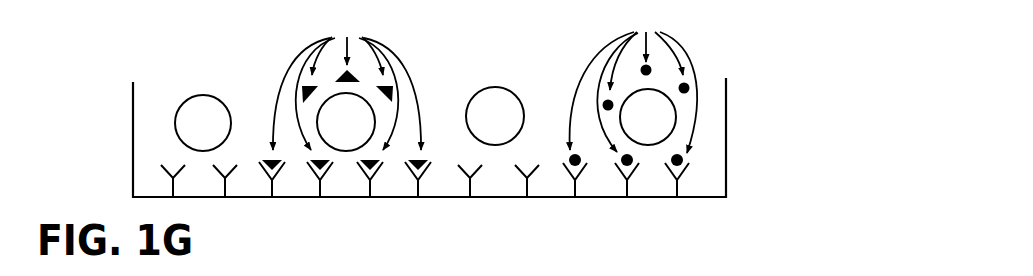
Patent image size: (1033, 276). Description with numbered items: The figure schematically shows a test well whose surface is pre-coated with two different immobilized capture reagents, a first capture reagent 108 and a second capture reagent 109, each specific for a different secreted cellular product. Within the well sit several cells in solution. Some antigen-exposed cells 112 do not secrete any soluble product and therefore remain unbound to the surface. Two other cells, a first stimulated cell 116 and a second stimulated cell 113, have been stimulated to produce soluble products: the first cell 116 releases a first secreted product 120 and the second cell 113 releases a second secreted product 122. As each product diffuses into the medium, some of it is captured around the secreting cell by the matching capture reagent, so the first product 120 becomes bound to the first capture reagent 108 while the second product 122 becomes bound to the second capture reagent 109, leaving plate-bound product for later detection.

The first capture reagent 108 is at (408, 186).
The second capture reagent 109 is at (584, 184).
The antigen-exposed cells 112 is at (203, 107).
The second stimulated cell 113 is at (668, 131).
The first stimulated cell 116 is at (363, 133).
The first secreted product 120 is at (347, 79).
The second secreted product 122 is at (634, 79).